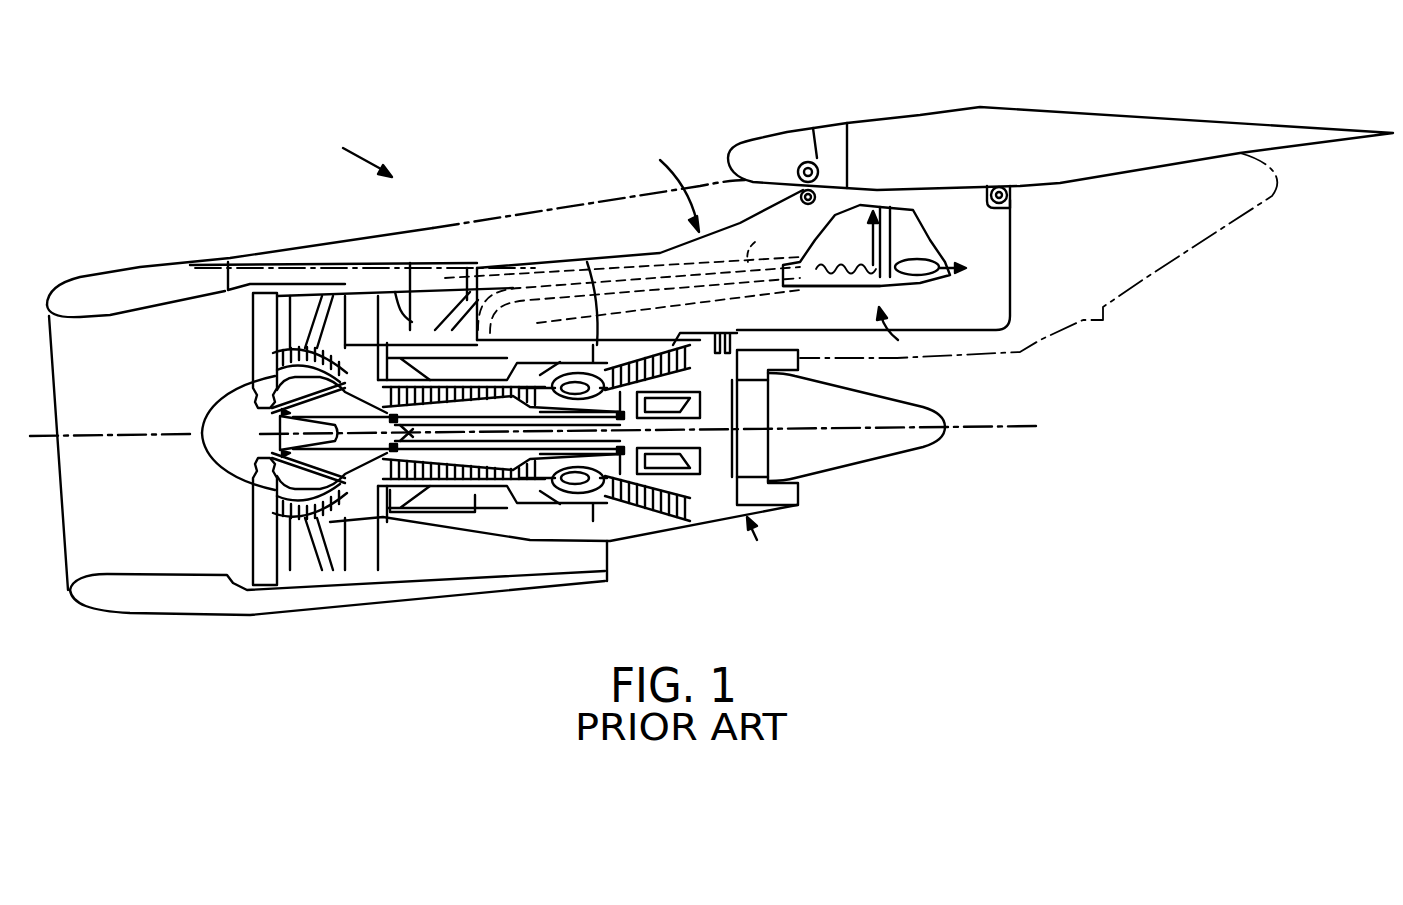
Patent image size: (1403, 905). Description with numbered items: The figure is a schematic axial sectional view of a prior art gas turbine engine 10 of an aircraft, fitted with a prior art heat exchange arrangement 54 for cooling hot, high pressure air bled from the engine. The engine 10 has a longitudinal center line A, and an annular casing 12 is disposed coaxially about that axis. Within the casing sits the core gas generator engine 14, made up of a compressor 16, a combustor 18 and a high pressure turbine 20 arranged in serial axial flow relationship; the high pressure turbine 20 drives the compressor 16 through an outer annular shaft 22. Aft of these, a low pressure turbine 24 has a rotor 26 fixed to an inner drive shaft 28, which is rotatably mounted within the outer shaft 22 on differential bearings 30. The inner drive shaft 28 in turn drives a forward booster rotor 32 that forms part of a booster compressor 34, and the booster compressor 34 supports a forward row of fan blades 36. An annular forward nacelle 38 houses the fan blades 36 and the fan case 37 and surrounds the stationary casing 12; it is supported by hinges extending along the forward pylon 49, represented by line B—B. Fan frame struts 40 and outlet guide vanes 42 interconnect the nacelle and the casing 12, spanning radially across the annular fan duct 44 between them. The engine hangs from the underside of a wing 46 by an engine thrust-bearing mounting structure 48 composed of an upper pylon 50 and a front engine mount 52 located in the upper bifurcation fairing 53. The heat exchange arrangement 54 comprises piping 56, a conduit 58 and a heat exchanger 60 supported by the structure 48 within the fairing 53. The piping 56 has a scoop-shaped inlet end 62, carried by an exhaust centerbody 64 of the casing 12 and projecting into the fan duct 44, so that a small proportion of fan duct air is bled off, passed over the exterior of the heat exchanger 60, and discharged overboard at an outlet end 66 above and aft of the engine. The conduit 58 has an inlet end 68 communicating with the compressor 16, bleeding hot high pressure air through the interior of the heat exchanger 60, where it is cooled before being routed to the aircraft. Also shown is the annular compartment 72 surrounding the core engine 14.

The gas turbine engine 10 is at (353, 155).
The annular casing 12 is at (623, 540).
The core gas generator engine 14 is at (838, 460).
The compressor 16 is at (477, 457).
The combustor 18 is at (563, 473).
The high pressure turbine 20 is at (600, 480).
The outer annular shaft 22 is at (463, 473).
The low pressure turbine 24 is at (635, 350).
The rotor 26 is at (723, 343).
The inner drive shaft 28 is at (527, 467).
The differential bearings 30 is at (430, 470).
The forward booster rotor 32 is at (262, 486).
The booster compressor 34 is at (285, 355).
The fan blades 36 is at (253, 314).
The fan case 37 is at (250, 597).
The forward nacelle 38 is at (480, 598).
The fan frame struts 40 is at (348, 268).
The outlet guide vanes 42 is at (290, 308).
The fan duct 44 is at (262, 300).
The wing 46 is at (980, 106).
The engine thrust-bearing mounting structure 48 is at (640, 204).
The forward pylon 49 is at (538, 208).
The upper pylon 50 is at (1010, 270).
The front engine mount 52 is at (470, 290).
The upper bifurcation fairing 53 is at (410, 263).
The heat exchange arrangement 54 is at (907, 335).
The piping 56 is at (673, 290).
The conduit 58 is at (756, 244).
The heat exchanger 60 is at (850, 295).
The inlet end 62 is at (410, 288).
The exhaust centerbody 64 is at (450, 295).
The outlet end 66 is at (933, 283).
The inlet end 68 is at (510, 378).
The annular compartment 72 is at (588, 265).